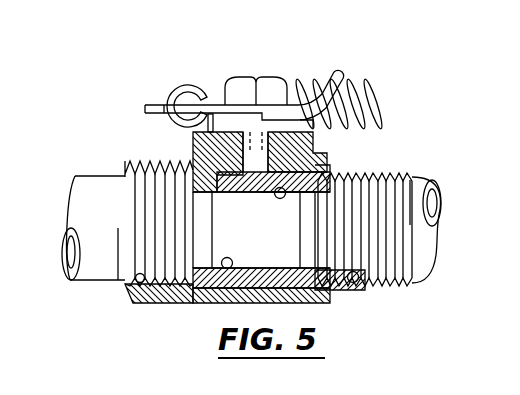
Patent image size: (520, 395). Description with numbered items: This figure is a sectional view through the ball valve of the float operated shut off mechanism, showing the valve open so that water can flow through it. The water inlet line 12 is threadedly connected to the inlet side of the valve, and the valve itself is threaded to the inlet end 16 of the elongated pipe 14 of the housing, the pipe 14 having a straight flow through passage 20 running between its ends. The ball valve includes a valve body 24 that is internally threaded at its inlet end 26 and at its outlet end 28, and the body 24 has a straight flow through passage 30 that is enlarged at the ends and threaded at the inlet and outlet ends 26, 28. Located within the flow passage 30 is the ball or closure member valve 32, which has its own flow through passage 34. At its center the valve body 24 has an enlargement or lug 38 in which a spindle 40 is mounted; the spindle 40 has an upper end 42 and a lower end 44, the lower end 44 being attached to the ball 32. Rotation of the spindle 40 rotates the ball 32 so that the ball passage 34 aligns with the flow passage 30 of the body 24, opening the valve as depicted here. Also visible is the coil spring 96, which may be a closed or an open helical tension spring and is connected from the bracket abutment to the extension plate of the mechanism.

The water inlet line 12 is at (97, 282).
The elongated pipe 14 is at (420, 178).
The inlet end 16 is at (390, 273).
The flow through passage 20 is at (432, 210).
The valve body 24 is at (145, 163).
The inlet end 26 is at (137, 281).
The outlet end 28 is at (355, 283).
The flow through passage 30 is at (220, 216).
The ball or closure member valve 32 is at (283, 193).
The flow through passage 34 is at (228, 269).
The enlargement or lug 38 is at (195, 153).
The spindle 40 is at (247, 133).
The upper end 42 is at (263, 130).
The lower end 44 is at (259, 178).
The coil spring 96 is at (370, 82).